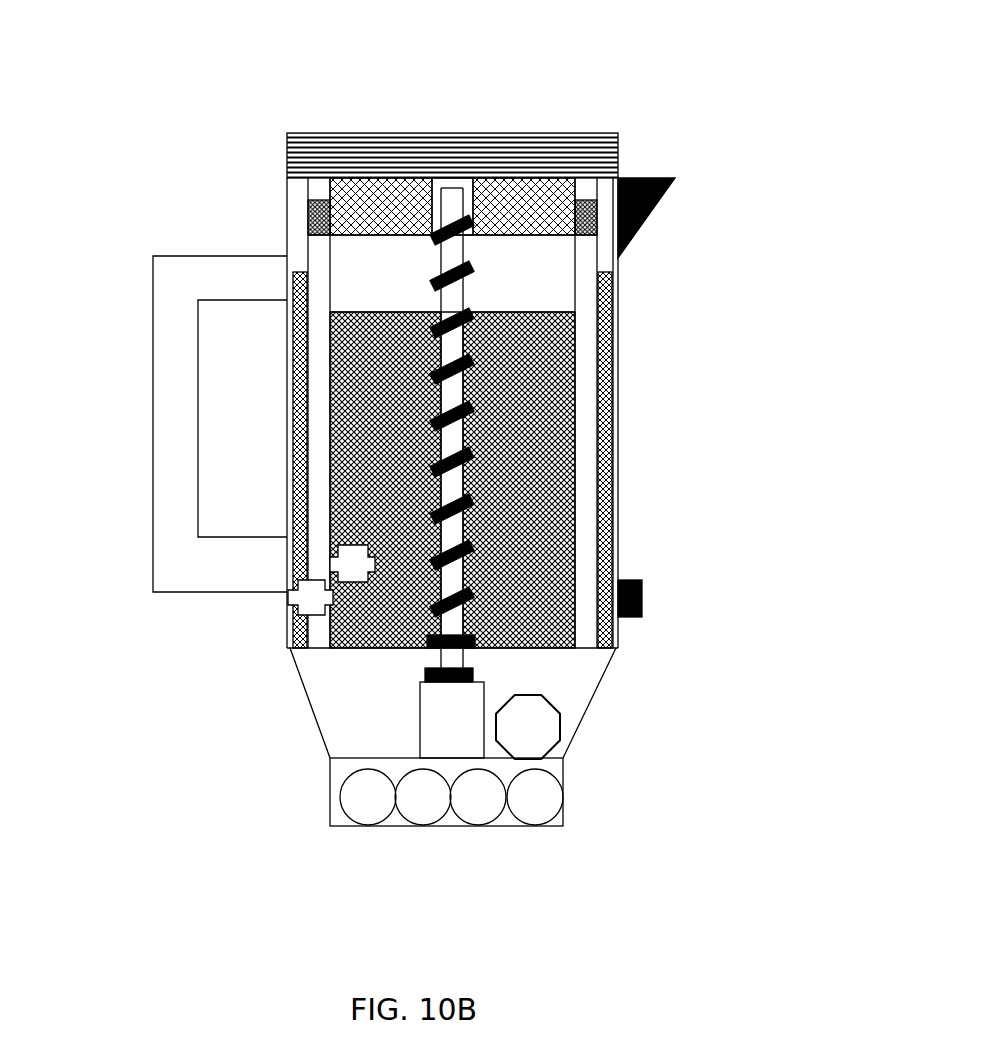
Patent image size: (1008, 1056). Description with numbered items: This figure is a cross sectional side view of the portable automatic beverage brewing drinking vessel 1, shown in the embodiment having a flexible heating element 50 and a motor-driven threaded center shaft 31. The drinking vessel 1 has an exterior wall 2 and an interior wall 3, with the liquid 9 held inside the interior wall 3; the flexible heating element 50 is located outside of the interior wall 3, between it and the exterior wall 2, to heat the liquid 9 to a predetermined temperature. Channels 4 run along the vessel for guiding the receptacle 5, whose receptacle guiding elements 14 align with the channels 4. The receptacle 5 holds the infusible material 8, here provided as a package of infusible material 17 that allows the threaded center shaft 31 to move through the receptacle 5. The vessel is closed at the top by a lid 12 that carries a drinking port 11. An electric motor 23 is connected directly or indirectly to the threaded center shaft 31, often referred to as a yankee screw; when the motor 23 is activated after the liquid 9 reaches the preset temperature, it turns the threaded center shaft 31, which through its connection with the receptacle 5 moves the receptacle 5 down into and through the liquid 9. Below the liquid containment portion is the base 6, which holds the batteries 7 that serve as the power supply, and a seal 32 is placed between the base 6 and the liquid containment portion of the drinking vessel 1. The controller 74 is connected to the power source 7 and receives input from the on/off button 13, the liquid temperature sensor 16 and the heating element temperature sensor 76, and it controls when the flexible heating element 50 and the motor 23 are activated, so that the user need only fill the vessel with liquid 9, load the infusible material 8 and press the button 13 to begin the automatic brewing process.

The drinking vessel 1 is at (660, 100).
The exterior wall 2 is at (618, 447).
The interior wall 3 is at (575, 502).
The channels 4 is at (585, 548).
The receptacle 5 is at (517, 238).
The base 6 is at (573, 692).
The batteries 7 is at (532, 797).
The infusible material 8 is at (510, 212).
The liquid 9 is at (365, 325).
The drinking port 11 is at (677, 178).
The lid 12 is at (618, 145).
The on/off button 13 is at (642, 593).
The receptacle guiding elements 14 is at (592, 241).
The temperature sensor 16 is at (348, 557).
The package of infusible material 17 is at (375, 185).
The electric motor 23 is at (419, 727).
The threaded center shaft 31 is at (431, 250).
The seal 32 is at (475, 636).
The flexible heating element 50 is at (300, 430).
The controller 74 is at (507, 727).
The heating element temperature sensor 76 is at (302, 600).